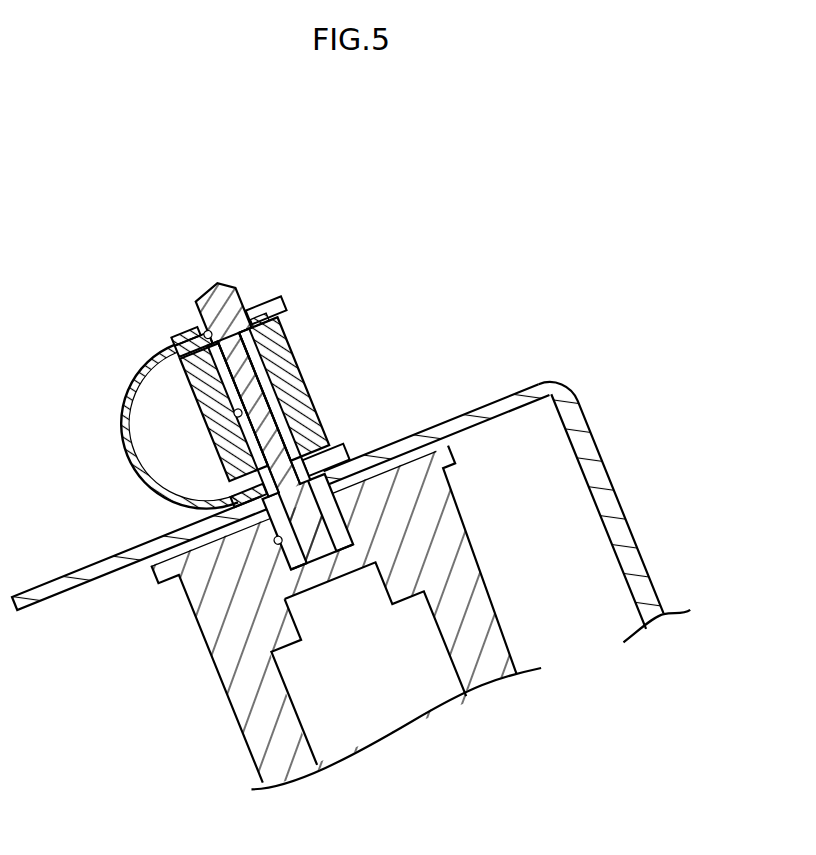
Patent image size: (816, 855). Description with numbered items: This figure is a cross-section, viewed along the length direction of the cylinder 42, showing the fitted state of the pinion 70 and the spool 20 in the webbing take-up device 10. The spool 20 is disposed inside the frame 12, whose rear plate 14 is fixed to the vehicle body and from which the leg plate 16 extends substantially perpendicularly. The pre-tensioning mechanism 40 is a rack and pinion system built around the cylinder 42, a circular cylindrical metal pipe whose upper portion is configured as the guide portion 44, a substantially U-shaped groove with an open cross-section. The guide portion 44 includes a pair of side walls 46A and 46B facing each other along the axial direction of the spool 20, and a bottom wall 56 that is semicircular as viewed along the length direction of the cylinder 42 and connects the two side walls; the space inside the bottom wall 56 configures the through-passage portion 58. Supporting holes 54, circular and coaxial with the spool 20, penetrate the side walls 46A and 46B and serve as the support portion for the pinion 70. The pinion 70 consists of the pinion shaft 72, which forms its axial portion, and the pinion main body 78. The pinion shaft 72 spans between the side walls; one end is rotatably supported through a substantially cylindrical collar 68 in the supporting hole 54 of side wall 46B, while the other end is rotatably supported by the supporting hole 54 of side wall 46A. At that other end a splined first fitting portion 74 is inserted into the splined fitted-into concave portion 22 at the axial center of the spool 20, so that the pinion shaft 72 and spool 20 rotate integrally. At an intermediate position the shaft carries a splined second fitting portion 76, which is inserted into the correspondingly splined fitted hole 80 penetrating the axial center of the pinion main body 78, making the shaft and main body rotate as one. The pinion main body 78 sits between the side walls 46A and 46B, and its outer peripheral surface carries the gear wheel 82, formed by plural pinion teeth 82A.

The webbing take-up device 10 is at (401, 427).
The frame 12 is at (391, 547).
The rear plate 14 is at (598, 432).
The leg plate 16 is at (505, 388).
The spool 20 is at (310, 637).
The fitted-into concave portion 22 is at (283, 553).
The pre-tensioning mechanism 40 is at (293, 337).
The cylinder 42 is at (249, 387).
The guide portion 44 is at (284, 292).
The side wall 46A is at (341, 446).
The side wall 46B is at (272, 293).
The supporting hole 54 is at (190, 338).
The bottom wall 56 is at (122, 432).
The through-passage portion 58 is at (163, 407).
The collar 68 is at (190, 330).
The pinion 70 is at (264, 302).
The pinion shaft 72 is at (194, 294).
The first fitting portion 74 is at (346, 526).
The second fitting portion 76 is at (310, 395).
The pinion main body 78 is at (354, 356).
The fitted hole 80 is at (236, 418).
The gear wheel 82 is at (358, 310).
The pinion teeth 82A is at (300, 352).